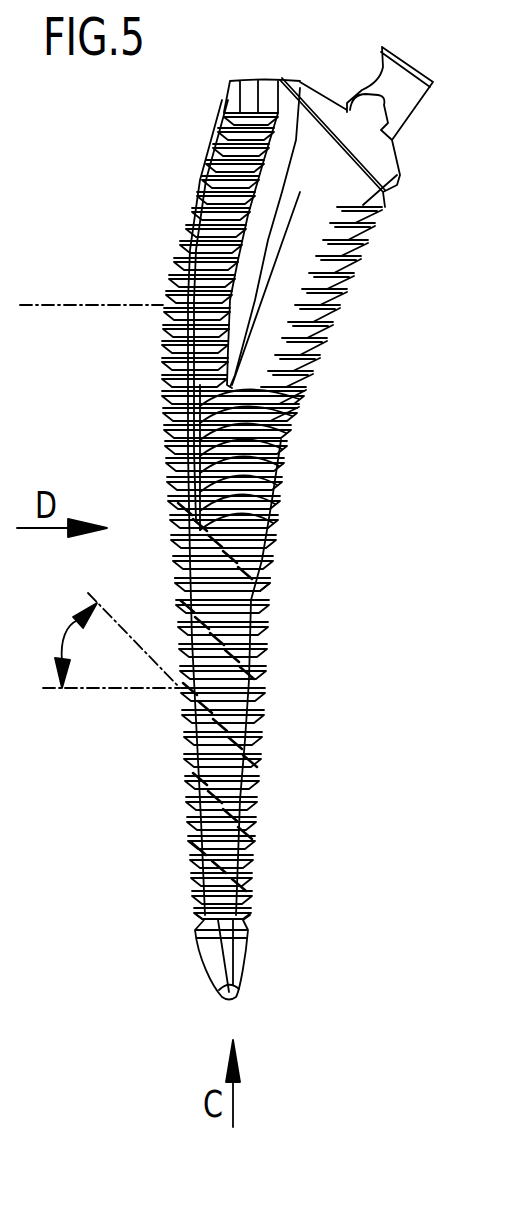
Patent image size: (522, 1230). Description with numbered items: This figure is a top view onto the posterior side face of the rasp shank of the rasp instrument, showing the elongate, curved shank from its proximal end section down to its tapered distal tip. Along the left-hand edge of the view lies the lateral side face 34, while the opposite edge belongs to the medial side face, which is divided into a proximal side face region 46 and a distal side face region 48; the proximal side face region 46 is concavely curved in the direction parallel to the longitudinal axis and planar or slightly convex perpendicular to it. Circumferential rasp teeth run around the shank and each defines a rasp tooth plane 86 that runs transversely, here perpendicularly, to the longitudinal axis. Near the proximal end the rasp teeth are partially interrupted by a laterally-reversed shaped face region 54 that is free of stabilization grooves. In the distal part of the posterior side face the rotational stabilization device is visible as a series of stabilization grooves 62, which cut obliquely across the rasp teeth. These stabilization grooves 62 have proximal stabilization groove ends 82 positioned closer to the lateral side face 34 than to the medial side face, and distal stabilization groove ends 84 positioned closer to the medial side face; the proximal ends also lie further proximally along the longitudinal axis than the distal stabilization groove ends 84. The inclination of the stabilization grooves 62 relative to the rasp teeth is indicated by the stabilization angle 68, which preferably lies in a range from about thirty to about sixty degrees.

The lateral side face 34 is at (137, 391).
The proximal side face region 46 is at (432, 167).
The distal side face region 48 is at (288, 523).
The face region free of stabilization grooves 54 is at (275, 232).
The stabilization grooves 62 is at (180, 728).
The stabilization angle 68 is at (60, 640).
The proximal stabilization groove ends 82 is at (173, 497).
The distal stabilization groove ends 84 is at (265, 590).
The rasp tooth plane 86 is at (68, 304).